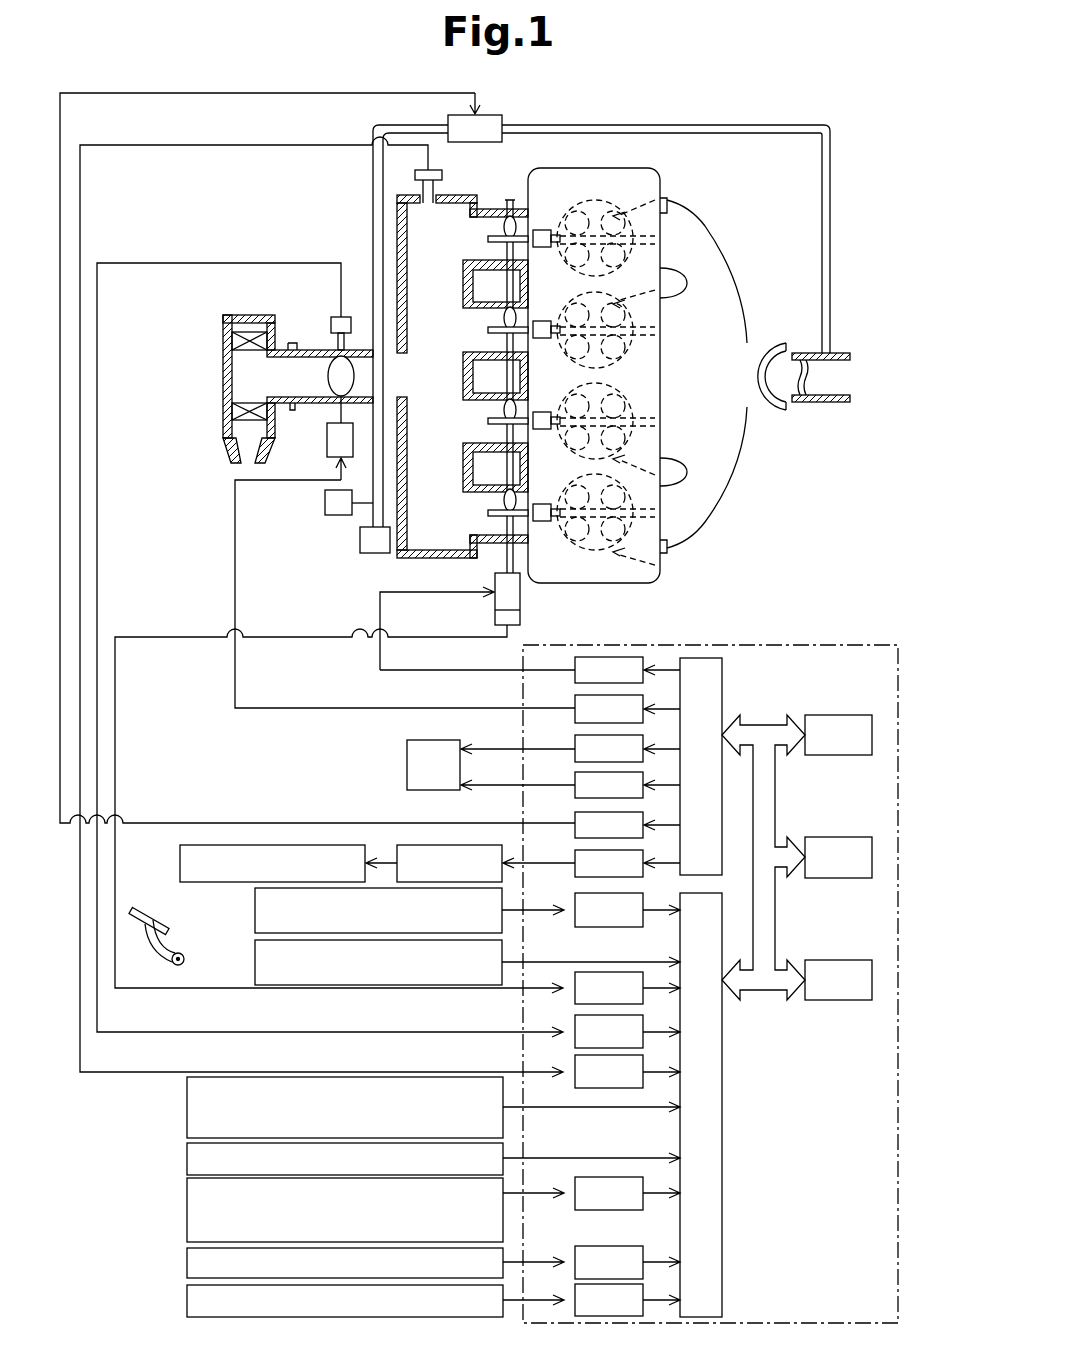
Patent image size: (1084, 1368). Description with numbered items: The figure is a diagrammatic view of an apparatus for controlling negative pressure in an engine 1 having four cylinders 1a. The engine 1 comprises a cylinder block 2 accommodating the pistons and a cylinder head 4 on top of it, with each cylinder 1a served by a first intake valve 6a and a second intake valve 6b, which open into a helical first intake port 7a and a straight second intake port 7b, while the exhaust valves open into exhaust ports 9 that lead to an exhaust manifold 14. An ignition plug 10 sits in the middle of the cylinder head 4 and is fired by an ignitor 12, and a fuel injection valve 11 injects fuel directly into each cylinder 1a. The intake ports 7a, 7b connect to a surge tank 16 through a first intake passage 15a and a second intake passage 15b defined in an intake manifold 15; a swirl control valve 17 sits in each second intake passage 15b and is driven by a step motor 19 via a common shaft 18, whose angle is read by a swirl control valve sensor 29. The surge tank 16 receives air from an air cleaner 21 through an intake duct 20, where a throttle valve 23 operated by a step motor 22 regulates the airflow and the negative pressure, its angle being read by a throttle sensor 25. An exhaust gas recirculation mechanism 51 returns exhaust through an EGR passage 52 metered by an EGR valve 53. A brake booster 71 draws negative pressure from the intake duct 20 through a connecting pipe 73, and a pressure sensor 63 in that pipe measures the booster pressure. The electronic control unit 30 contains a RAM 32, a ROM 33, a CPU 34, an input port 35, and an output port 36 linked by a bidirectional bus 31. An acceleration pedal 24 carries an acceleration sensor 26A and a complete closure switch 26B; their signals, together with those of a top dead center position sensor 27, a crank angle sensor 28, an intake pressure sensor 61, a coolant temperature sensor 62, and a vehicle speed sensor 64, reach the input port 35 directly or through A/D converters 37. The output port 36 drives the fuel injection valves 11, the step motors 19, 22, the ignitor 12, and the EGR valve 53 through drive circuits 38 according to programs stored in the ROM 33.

The engine 1 is at (618, 383).
The cylinder 1a is at (665, 193).
The cylinder block 2 is at (604, 399).
The cylinder head 4 is at (636, 585).
The first intake valve 6a is at (578, 427).
The second intake valve 6b is at (621, 328).
The first intake port 7a is at (572, 594).
The second intake port 7b is at (582, 185).
The exhaust port 9 is at (664, 238).
The ignition plug 10 is at (323, 845).
The fuel injection valve 11 is at (541, 228).
The ignitor 12 is at (480, 845).
The exhaust manifold 14 is at (752, 430).
The intake manifold 15 is at (478, 205).
The first intake passage 15a is at (470, 260).
The second intake passage 15b is at (470, 232).
The surge tank 16 is at (373, 222).
The swirl control valve 17 is at (503, 188).
The common shaft 18 is at (463, 378).
The step motor 19 is at (495, 600).
The intake duct 20 is at (312, 344).
The air cleaner 21 is at (223, 422).
The step motor 22 is at (327, 442).
The throttle valve 23 is at (355, 376).
The acceleration pedal 24 is at (137, 932).
The throttle sensor 25 is at (335, 315).
The acceleration sensor 26A is at (255, 912).
The complete closure switch 26B is at (255, 963).
The top dead center position sensor 27 is at (187, 1102).
The crank angle sensor 28 is at (187, 1155).
The swirl control valve sensor 29 is at (521, 617).
The electronic control unit 30 is at (822, 640).
The bidirectional bus 31 is at (758, 725).
The random access memory 32 is at (840, 715).
The read only memory 33 is at (842, 837).
The central processing unit 34 is at (847, 960).
The input port 35 is at (722, 1224).
The output port 36 is at (722, 666).
The A/D converter 37 is at (570, 1316).
The drive circuit 38 is at (572, 660).
The exhaust gas recirculation mechanism 51 is at (612, 126).
The EGR passage 52 is at (766, 125).
The EGR valve 53 is at (503, 118).
The intake pressure sensor 61 is at (415, 176).
The coolant temperature sensor 62 is at (187, 1207).
The pressure sensor 63 is at (325, 503).
The vehicle speed sensor 64 is at (187, 1296).
The brake booster 71 is at (360, 540).
The connecting pipe 73 is at (406, 450).